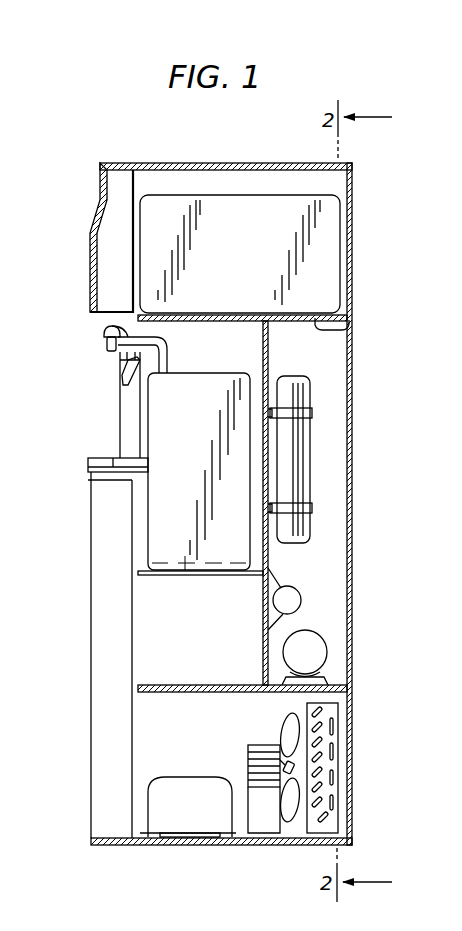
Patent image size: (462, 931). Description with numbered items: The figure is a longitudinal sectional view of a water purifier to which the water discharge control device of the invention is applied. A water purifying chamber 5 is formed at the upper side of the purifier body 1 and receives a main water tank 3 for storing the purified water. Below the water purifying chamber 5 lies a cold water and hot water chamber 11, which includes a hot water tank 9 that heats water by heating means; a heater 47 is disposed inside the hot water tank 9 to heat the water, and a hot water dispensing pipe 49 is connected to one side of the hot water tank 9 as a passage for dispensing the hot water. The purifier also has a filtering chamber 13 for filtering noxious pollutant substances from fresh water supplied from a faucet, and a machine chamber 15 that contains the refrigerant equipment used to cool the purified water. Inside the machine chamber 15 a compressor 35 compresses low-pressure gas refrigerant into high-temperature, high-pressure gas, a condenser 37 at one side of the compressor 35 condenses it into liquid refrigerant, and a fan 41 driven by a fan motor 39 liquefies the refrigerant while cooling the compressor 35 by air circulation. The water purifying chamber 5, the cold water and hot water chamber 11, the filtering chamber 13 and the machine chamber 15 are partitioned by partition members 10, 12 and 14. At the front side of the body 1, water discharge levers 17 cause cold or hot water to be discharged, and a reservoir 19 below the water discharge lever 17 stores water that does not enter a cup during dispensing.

The purifier body 1 is at (352, 413).
The main water tank 3 is at (328, 253).
The water purifying chamber 5 is at (329, 192).
The hot water tank 9 is at (158, 495).
The partition member 10 is at (348, 320).
The cold water and hot water chamber 11 is at (180, 619).
The partition member 12 is at (268, 553).
The filtering chamber 13 is at (320, 576).
The partition member 14 is at (170, 680).
The machine chamber 15 is at (177, 732).
The water discharge lever 17 is at (104, 341).
The reservoir 19 is at (108, 457).
The compressor 35 is at (180, 822).
The condenser 37 is at (333, 801).
The fan motor 39 is at (265, 781).
The fan 41 is at (290, 815).
The heater 47 is at (162, 560).
The hot water dispensing pipe 49 is at (167, 351).